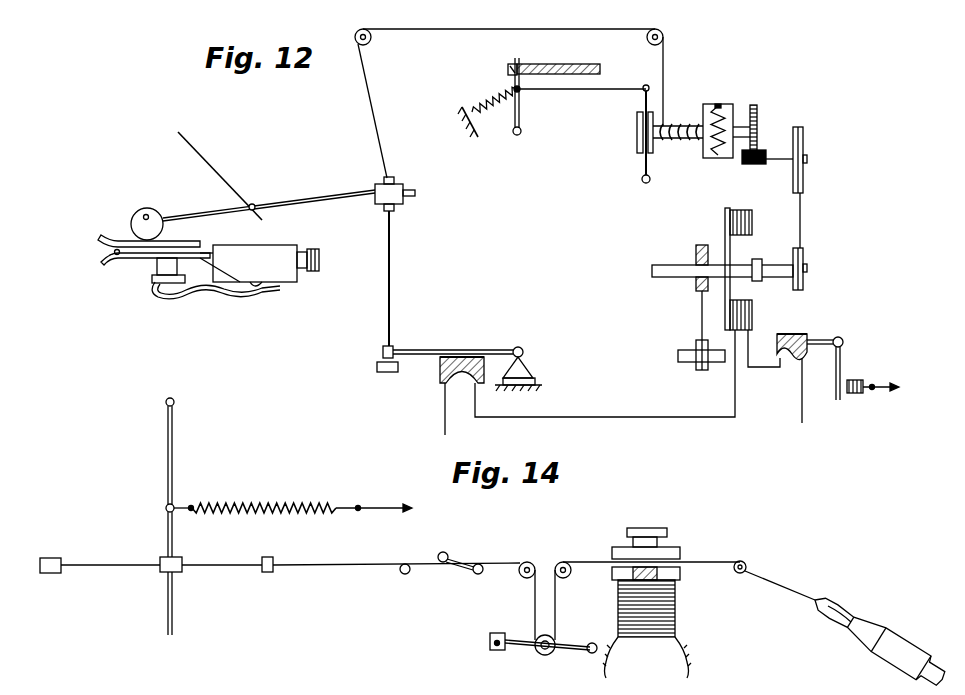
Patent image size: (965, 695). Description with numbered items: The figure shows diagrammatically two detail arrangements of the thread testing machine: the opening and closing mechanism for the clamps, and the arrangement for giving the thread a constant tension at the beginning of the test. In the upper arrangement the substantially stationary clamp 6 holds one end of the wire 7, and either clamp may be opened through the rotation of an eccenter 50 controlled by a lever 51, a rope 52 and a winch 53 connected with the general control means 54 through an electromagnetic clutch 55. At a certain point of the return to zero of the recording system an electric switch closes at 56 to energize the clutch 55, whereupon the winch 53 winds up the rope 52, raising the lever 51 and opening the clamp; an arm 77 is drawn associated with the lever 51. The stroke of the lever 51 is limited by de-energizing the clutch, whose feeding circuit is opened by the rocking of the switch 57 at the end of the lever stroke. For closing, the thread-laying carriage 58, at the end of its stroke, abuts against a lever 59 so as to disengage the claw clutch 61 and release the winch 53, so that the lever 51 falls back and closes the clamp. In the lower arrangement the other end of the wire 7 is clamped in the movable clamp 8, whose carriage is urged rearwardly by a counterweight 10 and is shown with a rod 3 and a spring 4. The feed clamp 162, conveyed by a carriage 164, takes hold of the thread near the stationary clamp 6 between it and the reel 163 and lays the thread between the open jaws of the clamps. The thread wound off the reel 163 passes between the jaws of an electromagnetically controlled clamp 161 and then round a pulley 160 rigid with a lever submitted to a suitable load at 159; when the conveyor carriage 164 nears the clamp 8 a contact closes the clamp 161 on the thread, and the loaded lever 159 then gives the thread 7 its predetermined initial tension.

In FIG. 12, the lever arm 77 is at (206, 136).
In FIG. 12, the eccenter 50 is at (142, 208).
In FIG. 12, the lever 51 is at (257, 212).
In FIG. 12, the wire 7 is at (108, 253).
In FIG. 14, the wire 7 is at (98, 567).
In FIG. 12, the substantially stationary clamp 6 is at (152, 266).
In FIG. 14, the substantially stationary clamp 6 is at (179, 568).
In FIG. 12, the rope 52 is at (384, 168).
In FIG. 12, the thread-laying carriage 58 is at (507, 67).
In FIG. 12, the carriage 164 is at (582, 70).
In FIG. 12, the lever 59 is at (521, 113).
In FIG. 12, the claw clutch 61 is at (720, 106).
In FIG. 12, the winch 53 is at (688, 145).
In FIG. 12, the electromagnetic clutch 55 is at (724, 210).
In FIG. 12, the general control means 54 is at (688, 355).
In FIG. 12, the electric switch 56 is at (805, 338).
In FIG. 12, the switch 57 is at (463, 358).
In FIG. 14, the counterweight 10 is at (174, 400).
In FIG. 14, the rod 3 is at (174, 474).
In FIG. 14, the spring 4 is at (367, 493).
In FIG. 14, the movable clamp 8 is at (45, 557).
In FIG. 14, the feed clamp 162 is at (267, 573).
In FIG. 14, the lever 159 is at (494, 651).
In FIG. 14, the pulley 160 is at (547, 655).
In FIG. 14, the clamp 161 is at (646, 530).
In FIG. 14, the reel 163 is at (890, 653).